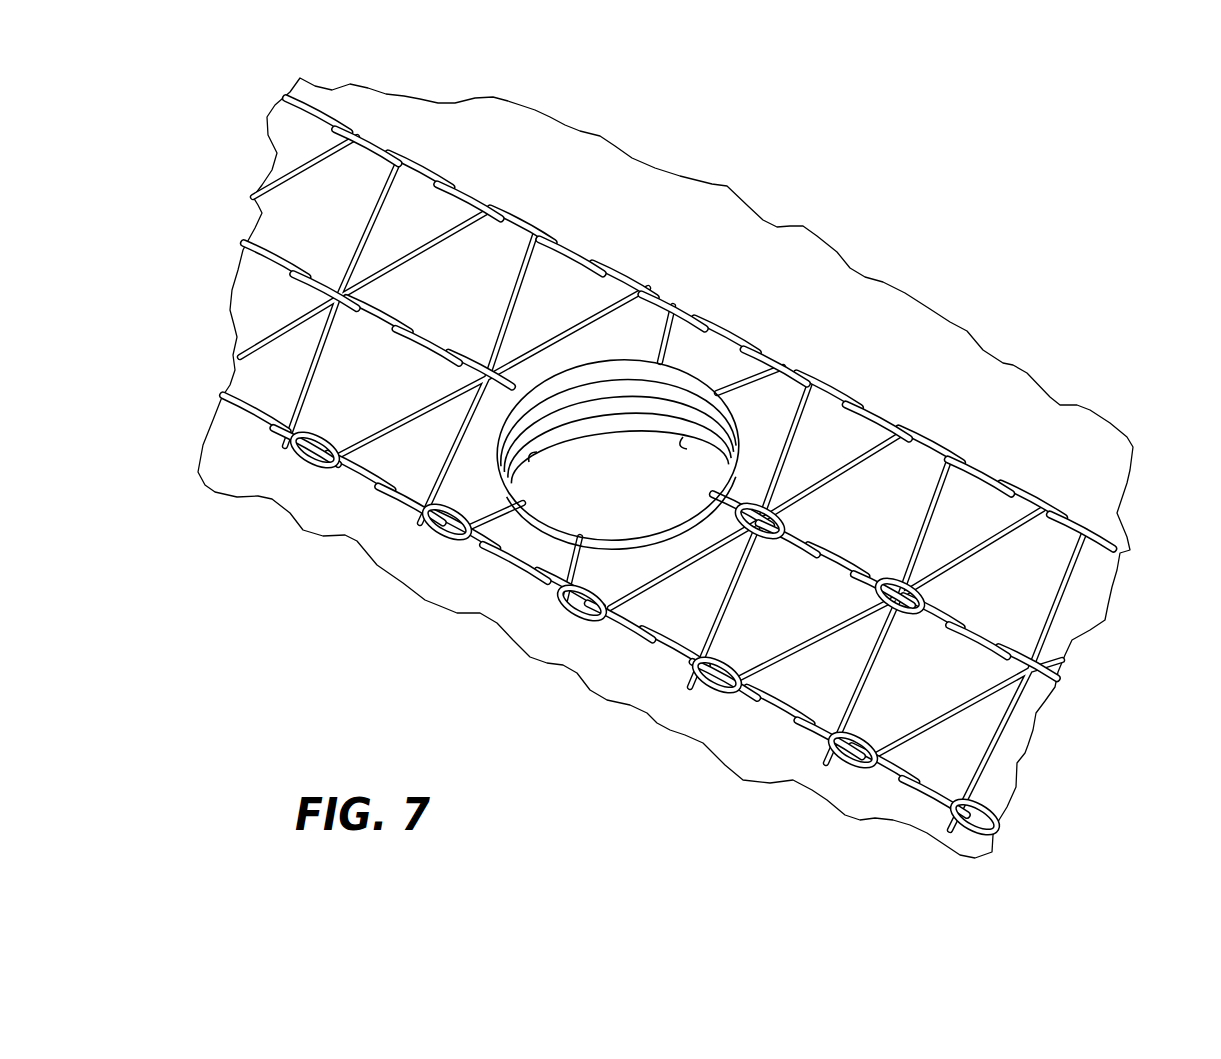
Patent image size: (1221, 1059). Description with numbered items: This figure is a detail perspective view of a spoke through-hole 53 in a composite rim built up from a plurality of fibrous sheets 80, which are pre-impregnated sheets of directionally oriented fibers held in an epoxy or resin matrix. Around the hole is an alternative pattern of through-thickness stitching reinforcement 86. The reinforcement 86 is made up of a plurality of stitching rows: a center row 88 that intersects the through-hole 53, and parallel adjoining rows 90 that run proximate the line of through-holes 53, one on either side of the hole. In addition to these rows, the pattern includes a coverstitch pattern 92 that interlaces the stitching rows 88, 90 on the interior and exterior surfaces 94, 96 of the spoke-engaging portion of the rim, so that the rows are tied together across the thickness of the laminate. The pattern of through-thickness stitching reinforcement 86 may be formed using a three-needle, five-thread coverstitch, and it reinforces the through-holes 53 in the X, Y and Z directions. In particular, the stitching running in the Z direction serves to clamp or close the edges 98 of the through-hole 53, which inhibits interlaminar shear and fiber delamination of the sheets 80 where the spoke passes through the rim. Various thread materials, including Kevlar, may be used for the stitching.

The pattern of through-thickness stitching reinforcement 86 is at (648, 192).
The fibrous sheets 80 is at (646, 432).
The edges of through-holes 98 is at (610, 357).
The interior surface 94 is at (703, 348).
The exterior surface 96 is at (690, 443).
The coverstitch pattern 92 is at (825, 477).
The parallel adjoining stitching rows 90 is at (985, 472).
The center stitching row 88 is at (940, 613).
The spoke through-hole 53 is at (623, 507).